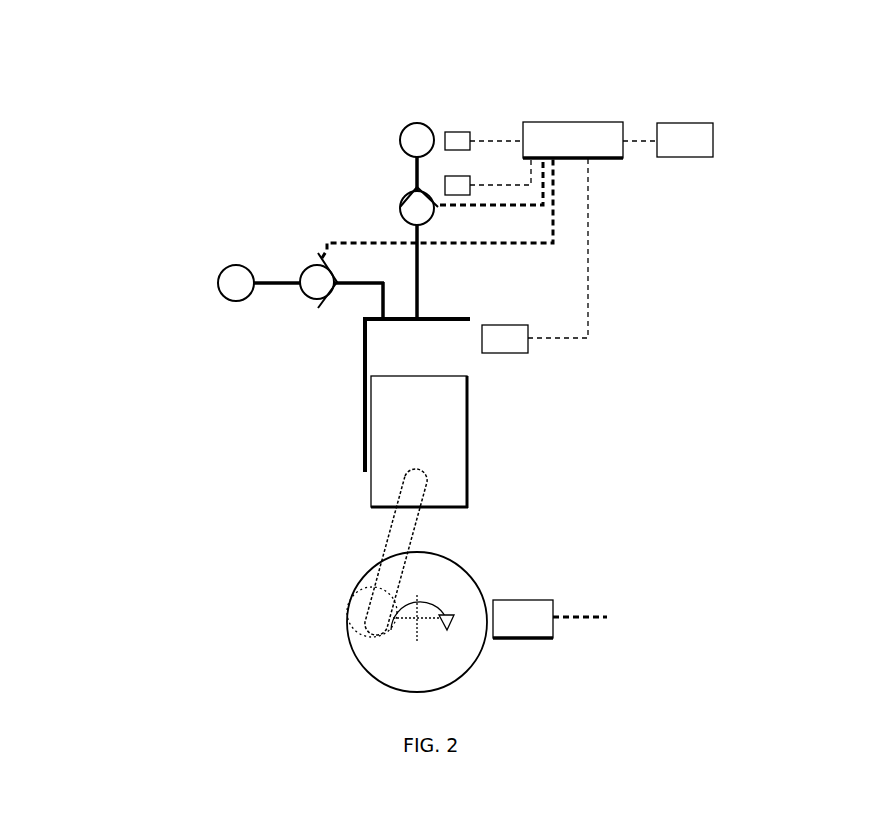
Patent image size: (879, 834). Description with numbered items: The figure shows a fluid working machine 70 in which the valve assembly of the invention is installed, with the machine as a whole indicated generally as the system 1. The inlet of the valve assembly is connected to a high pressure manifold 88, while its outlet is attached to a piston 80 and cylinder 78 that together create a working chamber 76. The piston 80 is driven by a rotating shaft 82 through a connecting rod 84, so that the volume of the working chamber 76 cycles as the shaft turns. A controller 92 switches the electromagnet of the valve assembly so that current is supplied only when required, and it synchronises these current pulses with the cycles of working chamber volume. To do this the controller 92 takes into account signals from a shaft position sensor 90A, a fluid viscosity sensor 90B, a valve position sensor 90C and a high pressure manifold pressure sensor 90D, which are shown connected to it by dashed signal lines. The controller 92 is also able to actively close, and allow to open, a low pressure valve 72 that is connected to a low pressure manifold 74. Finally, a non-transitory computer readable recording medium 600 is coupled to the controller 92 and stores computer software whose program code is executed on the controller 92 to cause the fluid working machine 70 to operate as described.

The fluid working machine 70 is at (152, 105).
The engine 1 is at (335, 223).
The low pressure valve 72 is at (302, 270).
The low pressure manifold 74 is at (235, 283).
The high pressure manifold 88 is at (425, 132).
The shaft position sensor 90A is at (518, 638).
The fluid viscosity sensor 90B is at (528, 353).
The valve position sensor 90C is at (467, 195).
The high pressure manifold pressure sensor 90D is at (468, 132).
The controller 92 is at (622, 122).
The non-transitory computer readable recording medium 600 is at (702, 122).
The working chamber 76 is at (428, 342).
The cylinder 78 is at (363, 342).
The piston 80 is at (387, 432).
The rotating shaft 82 is at (370, 642).
The connecting rod 84 is at (387, 538).